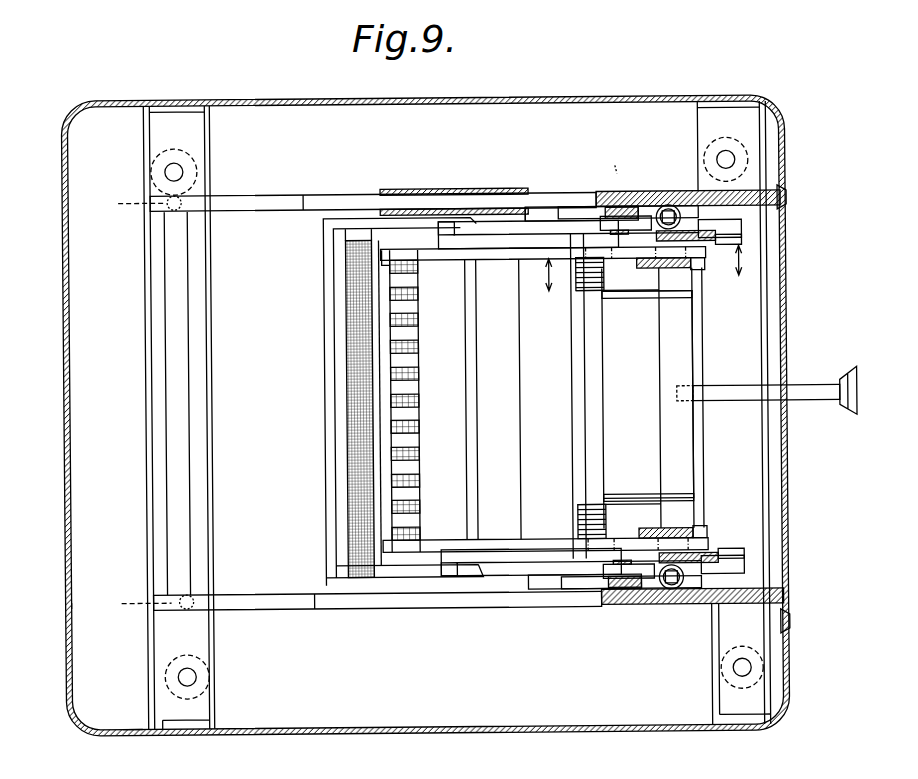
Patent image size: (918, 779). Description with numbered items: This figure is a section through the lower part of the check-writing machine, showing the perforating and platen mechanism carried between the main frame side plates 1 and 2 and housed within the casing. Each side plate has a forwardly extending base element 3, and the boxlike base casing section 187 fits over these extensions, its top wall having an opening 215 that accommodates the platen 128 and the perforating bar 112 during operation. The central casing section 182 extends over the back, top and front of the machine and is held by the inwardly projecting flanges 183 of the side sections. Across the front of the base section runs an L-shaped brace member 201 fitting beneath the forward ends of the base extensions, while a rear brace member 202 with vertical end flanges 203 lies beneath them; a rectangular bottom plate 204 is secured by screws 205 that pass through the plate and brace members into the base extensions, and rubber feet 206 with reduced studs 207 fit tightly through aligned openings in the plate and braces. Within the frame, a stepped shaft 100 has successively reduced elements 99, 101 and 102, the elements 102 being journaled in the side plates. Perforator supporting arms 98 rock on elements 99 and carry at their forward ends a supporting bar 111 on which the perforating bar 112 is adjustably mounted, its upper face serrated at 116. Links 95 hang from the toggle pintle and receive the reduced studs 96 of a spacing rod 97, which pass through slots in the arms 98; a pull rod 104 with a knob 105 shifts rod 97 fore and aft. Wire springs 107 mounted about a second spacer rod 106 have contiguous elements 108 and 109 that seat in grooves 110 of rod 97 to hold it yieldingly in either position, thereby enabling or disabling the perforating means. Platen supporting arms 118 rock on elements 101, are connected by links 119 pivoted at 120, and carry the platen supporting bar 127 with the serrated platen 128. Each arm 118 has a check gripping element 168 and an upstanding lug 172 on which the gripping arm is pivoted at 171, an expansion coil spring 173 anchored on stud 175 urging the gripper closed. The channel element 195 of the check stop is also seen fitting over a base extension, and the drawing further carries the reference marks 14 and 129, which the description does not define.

The side plate 1 is at (619, 175).
The side plate 2 is at (620, 590).
The base element 3 is at (230, 209).
The adjustment arrow 14 is at (653, 270).
The link 95 is at (686, 266).
The reduced stud 96 is at (692, 268).
The spacing rod 97 is at (670, 352).
The perforator supporting arm 98 is at (500, 260).
The reduced element 99 is at (566, 234).
The shaft 100 is at (525, 362).
The reduced element 101 is at (543, 208).
The reduced element 102 is at (530, 212).
The pull rod 104 is at (802, 388).
The knob 105 is at (850, 418).
The second spacer rod 106 is at (585, 327).
The wire spring 107 is at (609, 398).
The spring element 108 is at (642, 300).
The spring element 109 is at (660, 300).
The groove 110 is at (703, 305).
The supporting bar 111 is at (422, 508).
The perforating bar 112 is at (420, 440).
The serrations 116 is at (420, 398).
The platen supporting arm 118 is at (487, 222).
The link 119 is at (745, 242).
The pivot 120 is at (745, 228).
The platen supporting bar 127 is at (352, 505).
The platen 128 is at (365, 465).
The screen mesh 129 is at (350, 440).
The check gripping element 168 is at (447, 222).
The pivot 171 is at (616, 208).
The lug 172 is at (626, 218).
The expansion coil spring 173 is at (662, 210).
The stud 175 is at (671, 212).
The central casing section 182 is at (789, 556).
The flange 183 is at (788, 196).
The base casing section 187 is at (130, 733).
The channel element 195 is at (398, 176).
The brace member 201 is at (146, 509).
The brace member 202 is at (786, 472).
The flange 203 is at (700, 98).
The bottom plate 204 is at (70, 603).
The screw 205 is at (800, 592).
The foot 206 is at (200, 180).
The reduced stud 207 is at (180, 168).
The opening 215 is at (325, 318).